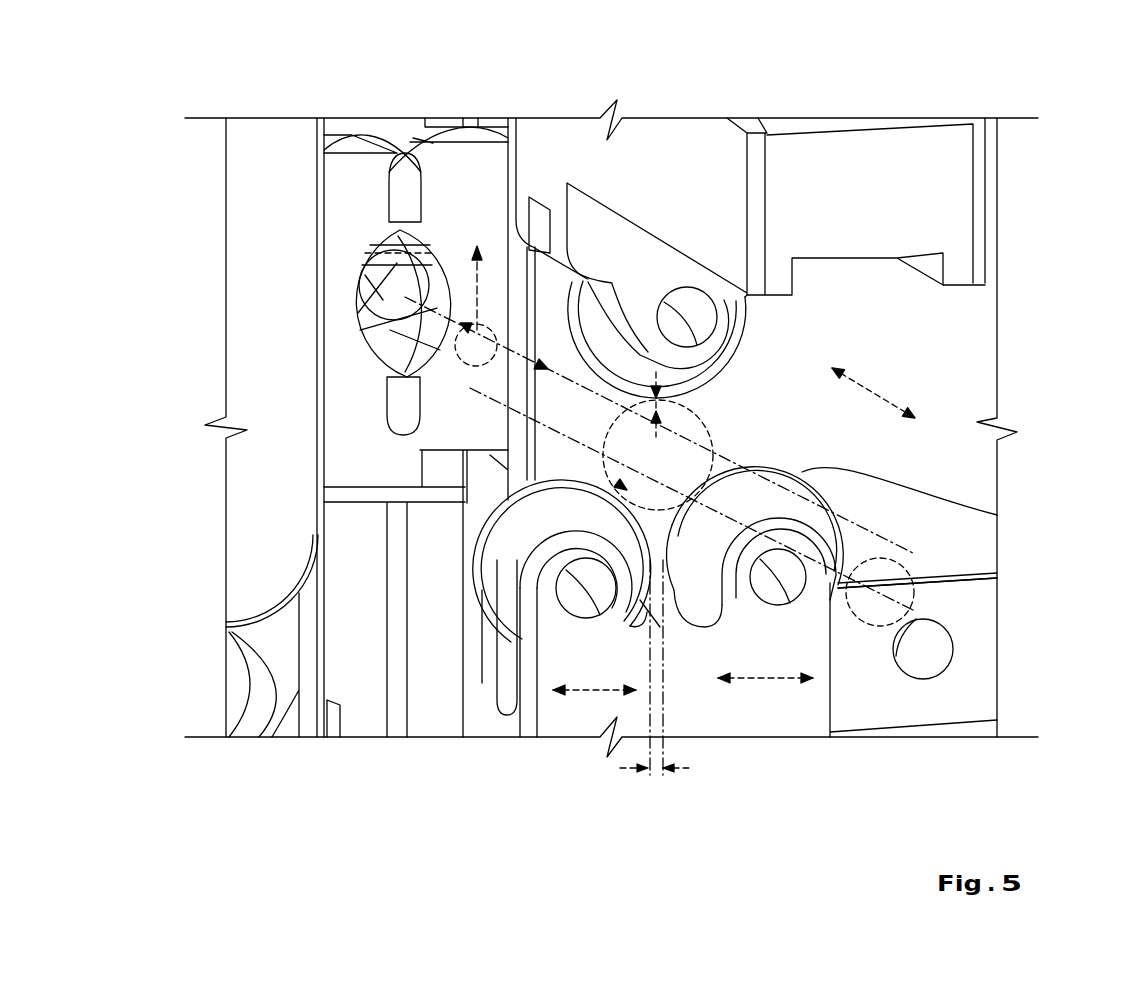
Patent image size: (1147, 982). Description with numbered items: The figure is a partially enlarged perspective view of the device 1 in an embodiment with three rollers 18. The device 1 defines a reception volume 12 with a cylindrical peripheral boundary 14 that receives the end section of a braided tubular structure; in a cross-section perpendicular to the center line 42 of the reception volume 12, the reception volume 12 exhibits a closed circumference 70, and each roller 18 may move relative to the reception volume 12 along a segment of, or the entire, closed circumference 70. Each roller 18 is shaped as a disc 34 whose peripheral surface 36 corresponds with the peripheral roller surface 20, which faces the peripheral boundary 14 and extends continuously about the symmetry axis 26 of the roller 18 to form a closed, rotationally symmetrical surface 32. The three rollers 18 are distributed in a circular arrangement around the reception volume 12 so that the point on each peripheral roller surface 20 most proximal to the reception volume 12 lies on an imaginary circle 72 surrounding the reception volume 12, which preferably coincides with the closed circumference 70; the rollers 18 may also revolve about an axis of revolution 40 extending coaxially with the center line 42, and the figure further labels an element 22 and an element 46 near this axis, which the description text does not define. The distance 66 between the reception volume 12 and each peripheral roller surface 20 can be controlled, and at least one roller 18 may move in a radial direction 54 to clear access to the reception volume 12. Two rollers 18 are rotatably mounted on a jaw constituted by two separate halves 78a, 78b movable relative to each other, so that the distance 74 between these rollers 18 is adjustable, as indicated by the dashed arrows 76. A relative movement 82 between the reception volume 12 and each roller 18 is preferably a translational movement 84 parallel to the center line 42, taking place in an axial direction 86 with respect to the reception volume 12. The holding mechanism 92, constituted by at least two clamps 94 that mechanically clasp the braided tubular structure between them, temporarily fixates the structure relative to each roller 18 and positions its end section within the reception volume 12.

The device 1 is at (968, 56).
The reception volume 12 is at (912, 572).
The peripheral boundary 14 is at (882, 548).
The roller 18 is at (657, 238).
The peripheral roller surface 20 is at (744, 191).
The hub 22 is at (415, 375).
The symmetry axis 26 is at (755, 370).
The closed, rotationally symmetrical surface 32 is at (744, 191).
The disc 34 is at (603, 295).
The peripheral surface 36 is at (578, 312).
The axis of revolution 40 is at (269, 323).
The center line 42 is at (269, 323).
The roller 46 is at (368, 337).
The radial direction 54 is at (480, 277).
The distance 66 is at (662, 395).
The closed circumference 70 is at (876, 628).
The imaginary circle 72 is at (713, 437).
The distance 74 is at (655, 775).
The dashed arrows 76 is at (592, 700).
The half 78a is at (556, 716).
The half 78b is at (797, 712).
The relative movement 82 is at (905, 390).
The translational movement 84 is at (875, 395).
The axial direction 86 is at (490, 378).
The holding mechanism 92 is at (272, 133).
The clamp 94 is at (360, 163).